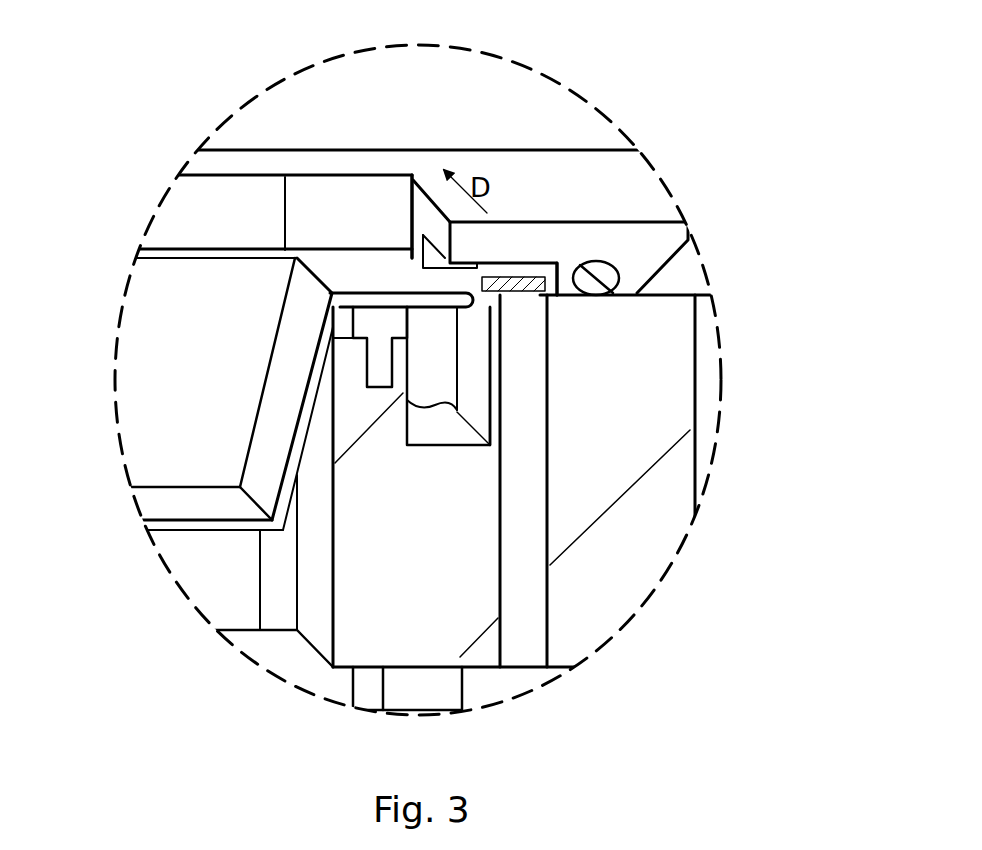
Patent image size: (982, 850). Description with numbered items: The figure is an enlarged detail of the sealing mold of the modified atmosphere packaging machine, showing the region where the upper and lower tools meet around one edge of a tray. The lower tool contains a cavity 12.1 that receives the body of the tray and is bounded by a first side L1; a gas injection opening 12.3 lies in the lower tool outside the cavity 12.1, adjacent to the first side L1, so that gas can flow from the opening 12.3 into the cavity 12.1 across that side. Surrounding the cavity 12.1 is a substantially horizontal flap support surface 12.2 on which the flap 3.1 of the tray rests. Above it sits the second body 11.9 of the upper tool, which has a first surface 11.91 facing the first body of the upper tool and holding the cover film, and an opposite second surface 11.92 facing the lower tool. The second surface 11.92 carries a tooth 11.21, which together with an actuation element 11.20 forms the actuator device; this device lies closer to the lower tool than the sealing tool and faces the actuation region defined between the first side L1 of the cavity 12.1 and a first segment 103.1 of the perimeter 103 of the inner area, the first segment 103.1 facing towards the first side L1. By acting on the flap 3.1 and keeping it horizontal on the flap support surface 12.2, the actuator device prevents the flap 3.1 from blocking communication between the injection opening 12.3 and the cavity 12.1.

The flap 3.1 is at (398, 262).
The gas injection opening 12.3 is at (527, 262).
The first surface 11.91 is at (618, 176).
The second body 11.9 is at (680, 270).
The second surface 11.92 is at (652, 304).
The perimeter 103 is at (383, 305).
The flap support surface 12.2 is at (329, 262).
The first side L1 is at (340, 386).
The cavity 12.1 is at (216, 579).
The actuation element 11.20 is at (433, 262).
The tooth 11.21 is at (475, 455).
The first segment 103.1 is at (544, 290).